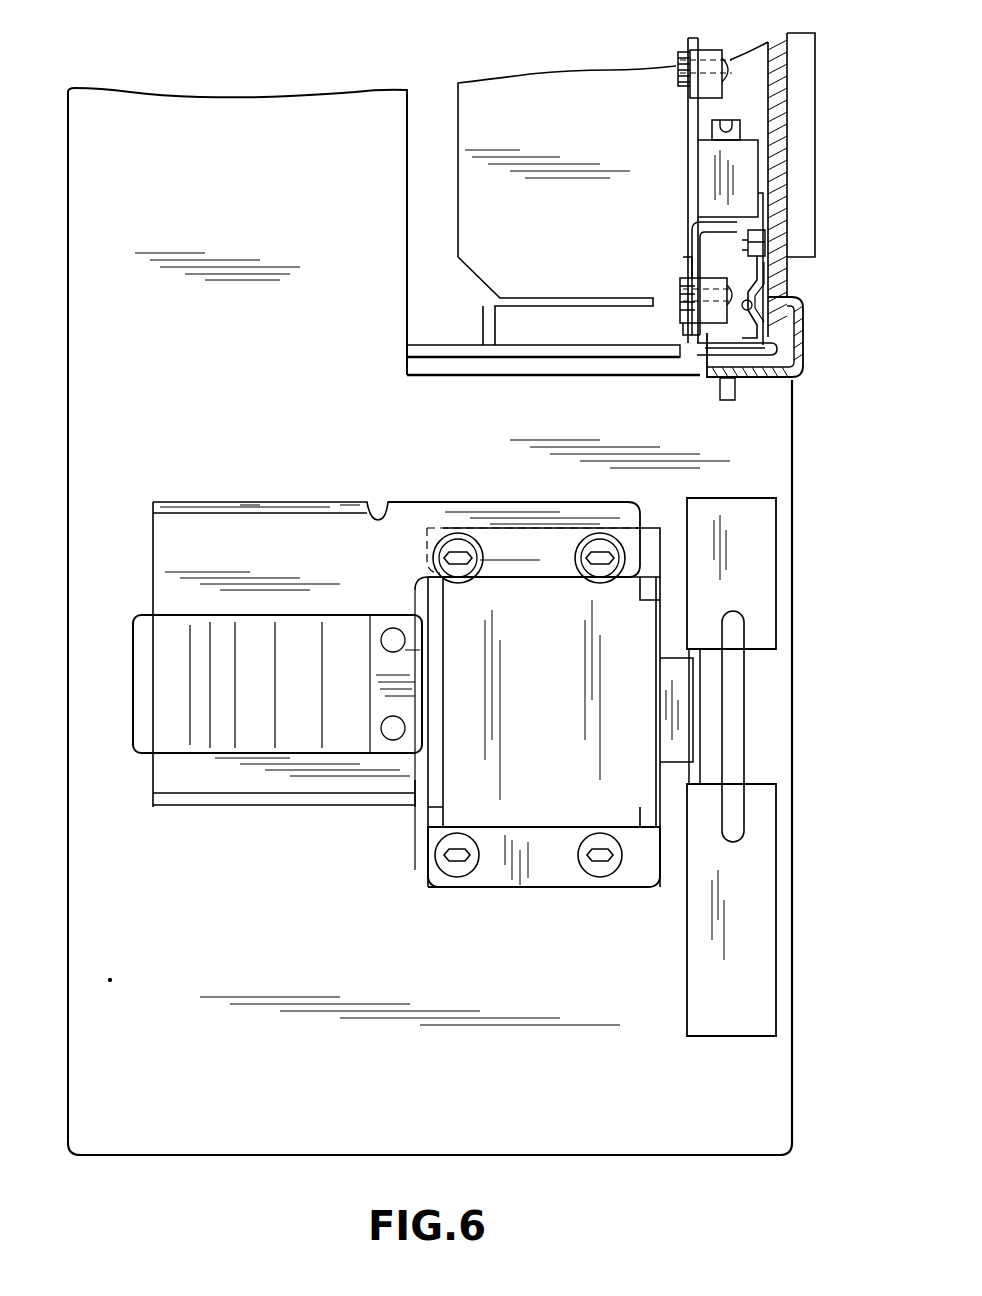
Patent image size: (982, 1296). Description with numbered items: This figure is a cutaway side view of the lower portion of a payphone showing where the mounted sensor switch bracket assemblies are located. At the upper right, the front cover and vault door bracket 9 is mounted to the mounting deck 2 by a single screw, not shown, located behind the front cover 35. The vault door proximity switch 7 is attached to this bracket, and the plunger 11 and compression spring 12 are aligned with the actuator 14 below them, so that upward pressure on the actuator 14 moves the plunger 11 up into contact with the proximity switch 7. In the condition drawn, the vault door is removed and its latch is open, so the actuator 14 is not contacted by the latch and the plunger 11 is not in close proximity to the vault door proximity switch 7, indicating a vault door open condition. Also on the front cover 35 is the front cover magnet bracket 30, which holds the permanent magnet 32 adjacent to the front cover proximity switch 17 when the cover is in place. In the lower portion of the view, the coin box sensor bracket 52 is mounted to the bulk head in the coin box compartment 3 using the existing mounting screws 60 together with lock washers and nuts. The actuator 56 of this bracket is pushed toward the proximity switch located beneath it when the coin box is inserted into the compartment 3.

The mounting deck 2 is at (616, 346).
The coin box compartment 3 is at (115, 880).
The vault door proximity switch 7 is at (706, 52).
The front cover and vault door bracket 9 is at (690, 177).
The plunger 11 is at (712, 129).
The compression spring 12 is at (726, 127).
The actuator 14 is at (735, 388).
The front cover proximity switch 17 is at (700, 279).
The front cover magnet bracket 30 is at (770, 279).
The permanent magnet 32 is at (753, 308).
The front cover 35 is at (775, 108).
The coin box sensor bracket 52 is at (607, 506).
The actuator 56 is at (300, 636).
The mounting screws 60 is at (592, 555).